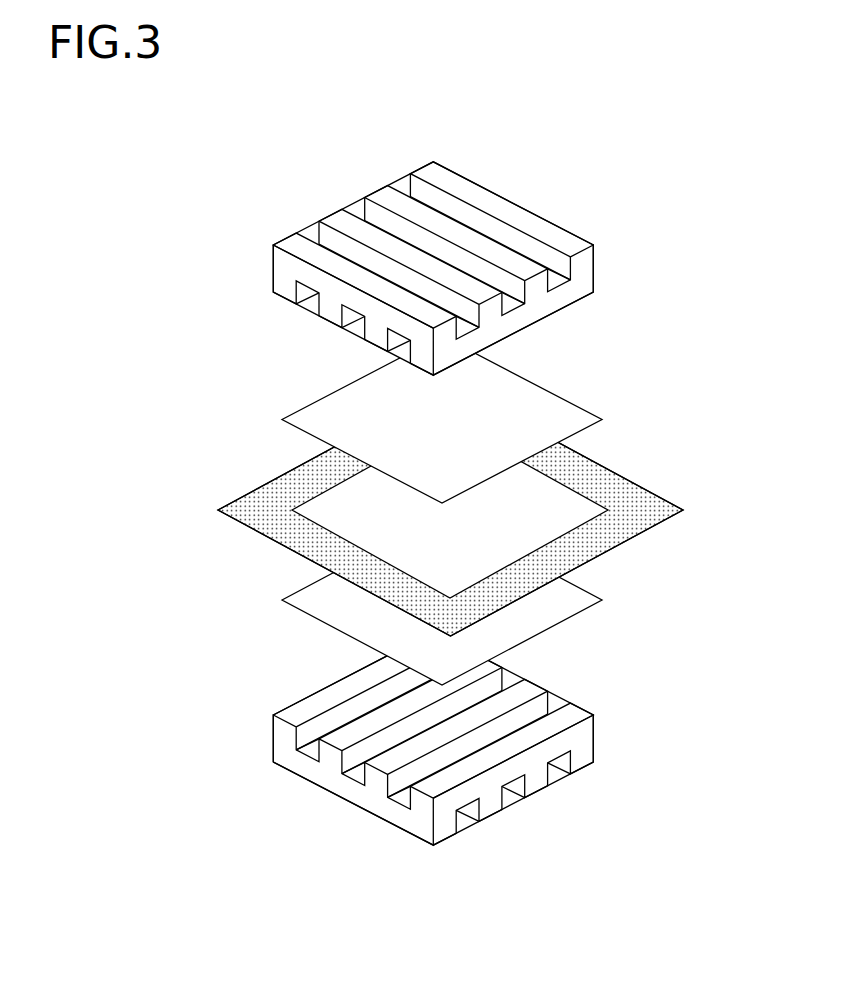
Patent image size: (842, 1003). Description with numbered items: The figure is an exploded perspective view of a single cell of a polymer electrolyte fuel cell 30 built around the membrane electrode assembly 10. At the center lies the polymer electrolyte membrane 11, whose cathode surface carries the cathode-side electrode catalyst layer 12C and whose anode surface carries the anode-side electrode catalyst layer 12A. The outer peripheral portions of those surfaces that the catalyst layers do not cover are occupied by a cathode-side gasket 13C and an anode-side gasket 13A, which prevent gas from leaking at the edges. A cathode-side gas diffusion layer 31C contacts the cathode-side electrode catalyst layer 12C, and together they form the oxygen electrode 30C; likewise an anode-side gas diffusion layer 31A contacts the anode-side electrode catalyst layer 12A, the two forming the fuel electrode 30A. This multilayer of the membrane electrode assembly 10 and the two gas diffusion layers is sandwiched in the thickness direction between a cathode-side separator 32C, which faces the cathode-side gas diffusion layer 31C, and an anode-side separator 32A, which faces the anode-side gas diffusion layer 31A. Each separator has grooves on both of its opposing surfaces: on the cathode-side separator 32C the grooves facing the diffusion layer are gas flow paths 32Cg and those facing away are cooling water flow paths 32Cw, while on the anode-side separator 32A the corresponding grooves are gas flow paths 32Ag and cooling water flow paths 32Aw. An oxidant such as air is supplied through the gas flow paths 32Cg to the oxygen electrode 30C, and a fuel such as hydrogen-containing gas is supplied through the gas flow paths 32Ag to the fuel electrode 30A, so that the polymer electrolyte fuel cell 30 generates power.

The membrane electrode assembly 10 is at (188, 542).
The polymer electrolyte membrane 11 is at (684, 509).
The anode-side electrode catalyst layer 12A is at (592, 565).
The cathode-side electrode catalyst layer 12C is at (572, 482).
The anode-side gasket 13A is at (253, 531).
The cathode-side gasket 13C is at (253, 489).
The polymer electrolyte fuel cell 30 is at (641, 205).
The fuel electrode (anode) 30A is at (703, 556).
The oxygen electrode (cathode) 30C is at (703, 371).
The anode-side gas diffusion layer 31A is at (586, 620).
The cathode-side gas diffusion layer 31C is at (567, 397).
The anode-side separator 32A is at (271, 736).
The gas flow paths 32Ag is at (320, 760).
The cooling water flow paths 32Aw is at (560, 768).
The cathode-side separator 32C is at (271, 278).
The gas flow paths 32Cg is at (307, 293).
The cooling water flow paths 32Cw is at (566, 281).